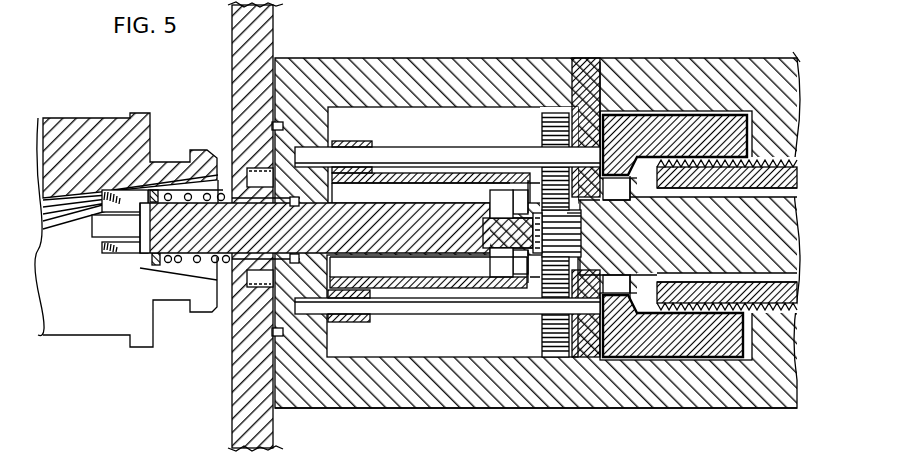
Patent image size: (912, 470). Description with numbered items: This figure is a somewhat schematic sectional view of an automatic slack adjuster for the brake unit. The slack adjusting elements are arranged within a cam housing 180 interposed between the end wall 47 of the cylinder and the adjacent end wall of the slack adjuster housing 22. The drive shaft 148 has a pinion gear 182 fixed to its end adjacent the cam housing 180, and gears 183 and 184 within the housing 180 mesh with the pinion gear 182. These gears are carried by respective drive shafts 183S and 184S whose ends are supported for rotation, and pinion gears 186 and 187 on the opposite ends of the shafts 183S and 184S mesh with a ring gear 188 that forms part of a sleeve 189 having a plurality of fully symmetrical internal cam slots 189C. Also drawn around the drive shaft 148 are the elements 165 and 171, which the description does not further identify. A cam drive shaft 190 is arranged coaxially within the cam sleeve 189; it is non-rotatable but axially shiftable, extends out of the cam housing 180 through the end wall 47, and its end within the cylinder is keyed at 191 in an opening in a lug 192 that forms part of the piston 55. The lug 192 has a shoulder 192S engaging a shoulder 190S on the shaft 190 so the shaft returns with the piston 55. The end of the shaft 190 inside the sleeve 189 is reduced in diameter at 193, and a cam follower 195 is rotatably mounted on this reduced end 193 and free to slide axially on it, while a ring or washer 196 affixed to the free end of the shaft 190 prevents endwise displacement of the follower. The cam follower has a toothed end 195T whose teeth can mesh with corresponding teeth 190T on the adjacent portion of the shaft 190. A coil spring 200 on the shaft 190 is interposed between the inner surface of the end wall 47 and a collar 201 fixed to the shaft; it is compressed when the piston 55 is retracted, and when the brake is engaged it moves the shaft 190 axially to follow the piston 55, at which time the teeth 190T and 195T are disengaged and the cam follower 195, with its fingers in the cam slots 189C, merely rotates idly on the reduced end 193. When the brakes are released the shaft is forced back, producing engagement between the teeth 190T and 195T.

The slack adjuster housing 22 is at (703, 414).
The end wall of the cylinder 47 is at (238, 417).
The piston 55 is at (166, 162).
The drive shaft 148 is at (748, 243).
The upper bolt 165 is at (765, 168).
The lower bolt 171 is at (653, 340).
The cam housing 180 is at (460, 57).
The pinion gear 182 is at (583, 236).
The gear 183 is at (545, 131).
The drive shaft 183S is at (526, 158).
The gear 184 is at (542, 337).
The drive shaft 184S is at (397, 302).
The pinion gear 186 is at (352, 145).
The pinion gear 187 is at (342, 315).
The ring gear 188 is at (356, 290).
The sleeve 189 is at (430, 268).
The internal cam slots 189C is at (397, 193).
The cam drive shaft 190 is at (367, 240).
The shoulder 190S is at (141, 245).
The teeth 190T is at (477, 212).
The key 191 is at (107, 228).
The lug 192 is at (103, 253).
The shoulder 192S is at (140, 210).
The reduced end 193 is at (510, 233).
The cam follower 195 is at (507, 252).
The toothed end 195T is at (492, 257).
The ring or washer 196 is at (583, 220).
The coil spring 200 is at (197, 261).
The collar 201 is at (141, 263).